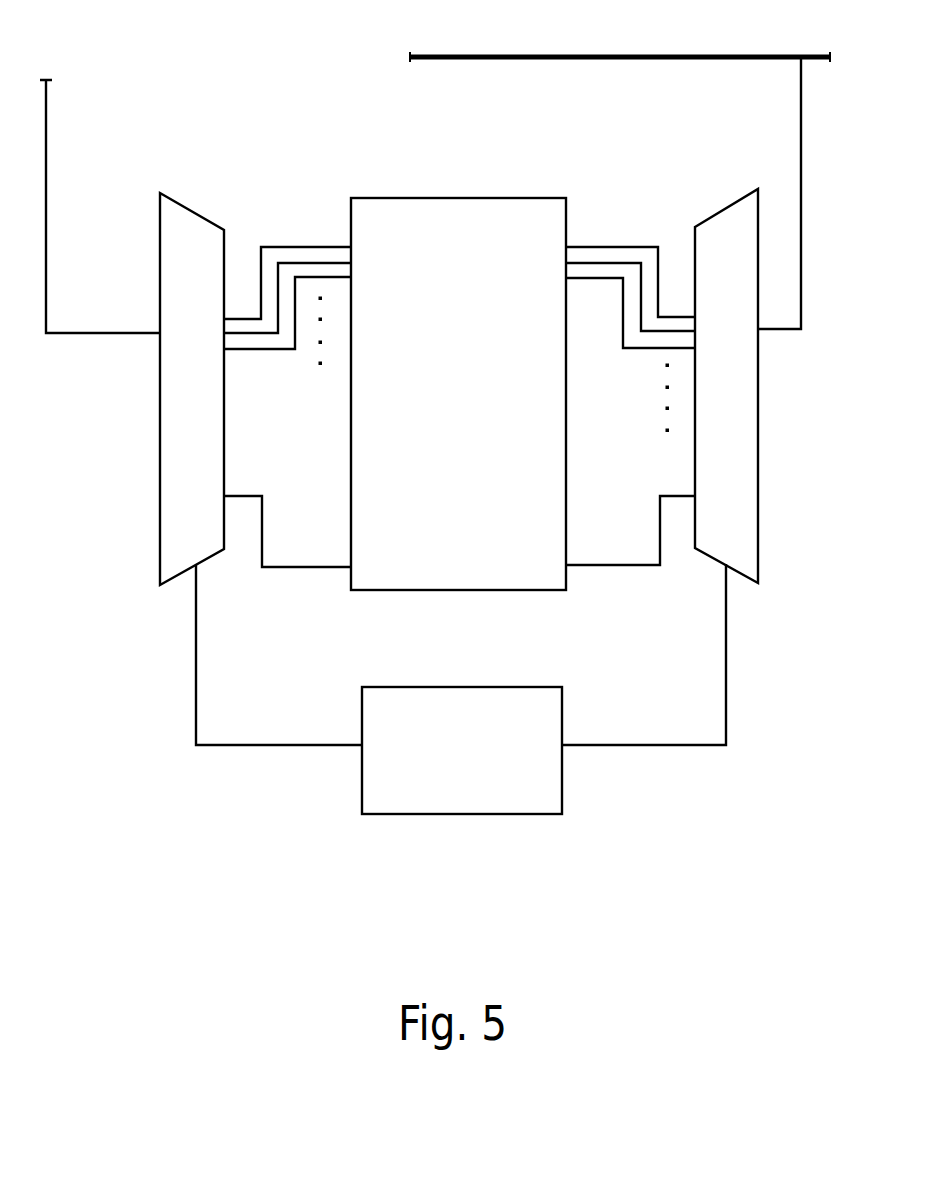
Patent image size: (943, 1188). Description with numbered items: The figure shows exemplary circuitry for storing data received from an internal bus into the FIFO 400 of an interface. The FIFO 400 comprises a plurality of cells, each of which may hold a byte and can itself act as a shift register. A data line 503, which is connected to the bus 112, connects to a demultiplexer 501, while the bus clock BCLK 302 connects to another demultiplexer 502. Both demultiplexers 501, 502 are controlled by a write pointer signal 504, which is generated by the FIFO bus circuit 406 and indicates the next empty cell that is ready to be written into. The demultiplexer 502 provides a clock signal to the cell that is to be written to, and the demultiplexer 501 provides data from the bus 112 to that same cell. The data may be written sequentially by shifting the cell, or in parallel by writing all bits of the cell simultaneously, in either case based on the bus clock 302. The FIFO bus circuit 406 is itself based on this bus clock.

The internal bus 112 is at (627, 60).
The data line 503 is at (801, 90).
The bus clock (BCLK) 302 is at (123, 334).
The demultiplexer 502 is at (160, 490).
The demultiplexer 501 is at (717, 559).
The FIFO 400 is at (374, 591).
The write pointer signal 504 is at (260, 747).
The FIFO bus circuit 406 is at (475, 815).